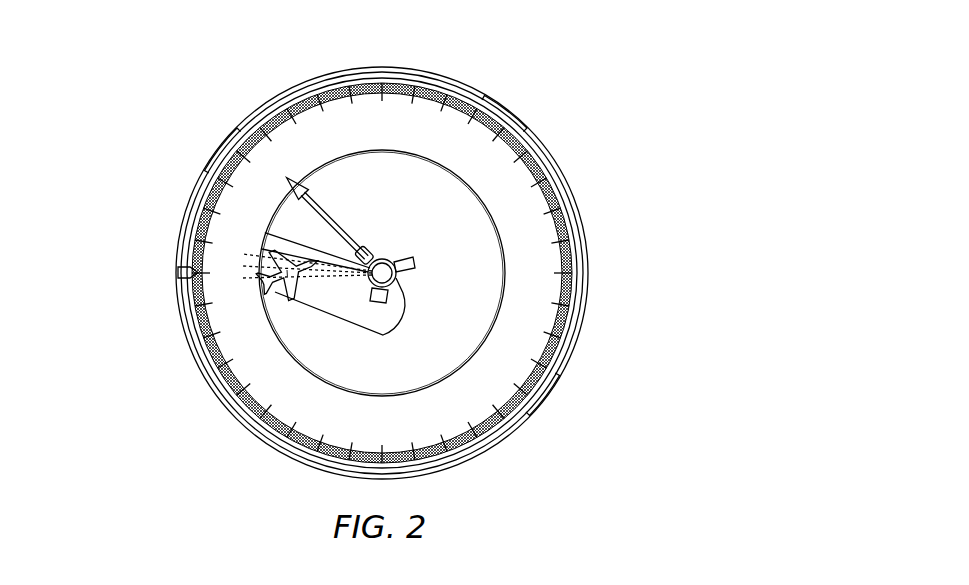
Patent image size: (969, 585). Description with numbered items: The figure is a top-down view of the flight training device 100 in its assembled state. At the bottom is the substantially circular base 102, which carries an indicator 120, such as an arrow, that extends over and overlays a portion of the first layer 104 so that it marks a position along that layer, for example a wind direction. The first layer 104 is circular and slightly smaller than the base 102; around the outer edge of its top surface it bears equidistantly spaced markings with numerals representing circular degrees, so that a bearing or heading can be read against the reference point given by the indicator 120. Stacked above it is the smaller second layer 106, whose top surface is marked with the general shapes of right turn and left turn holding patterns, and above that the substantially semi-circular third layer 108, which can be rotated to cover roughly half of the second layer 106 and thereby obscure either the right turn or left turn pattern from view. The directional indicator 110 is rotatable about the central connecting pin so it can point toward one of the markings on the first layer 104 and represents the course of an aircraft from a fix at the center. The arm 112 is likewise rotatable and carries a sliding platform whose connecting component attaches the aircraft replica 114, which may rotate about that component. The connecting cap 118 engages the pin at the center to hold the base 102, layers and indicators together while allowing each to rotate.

The flight training device 100 is at (94, 92).
The base 102 is at (566, 357).
The first layer 104 is at (542, 194).
The second layer 106 is at (465, 325).
The third layer 108 is at (462, 222).
The directional indicator 110 is at (388, 296).
The arm 112 is at (363, 275).
The aircraft replica 114 is at (312, 261).
The connecting cap 118 is at (386, 271).
The indicator 120 is at (178, 272).